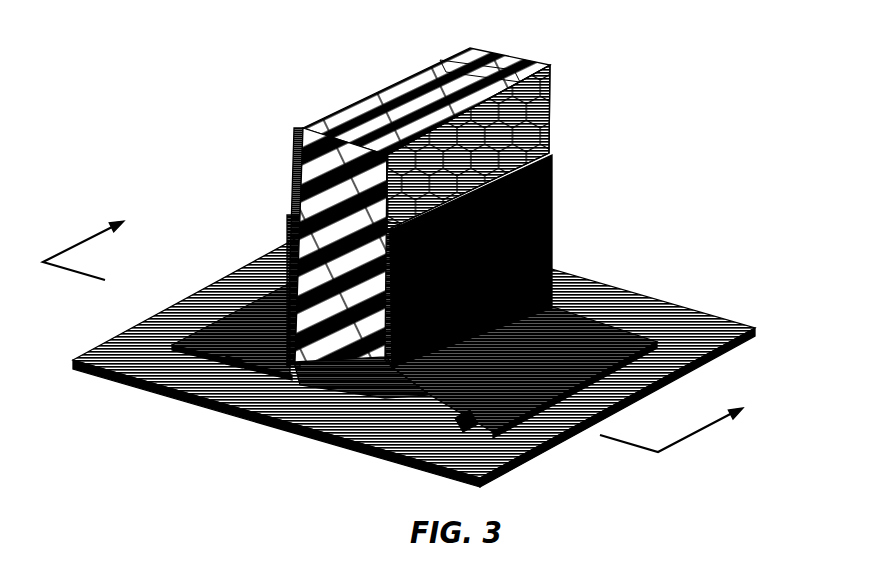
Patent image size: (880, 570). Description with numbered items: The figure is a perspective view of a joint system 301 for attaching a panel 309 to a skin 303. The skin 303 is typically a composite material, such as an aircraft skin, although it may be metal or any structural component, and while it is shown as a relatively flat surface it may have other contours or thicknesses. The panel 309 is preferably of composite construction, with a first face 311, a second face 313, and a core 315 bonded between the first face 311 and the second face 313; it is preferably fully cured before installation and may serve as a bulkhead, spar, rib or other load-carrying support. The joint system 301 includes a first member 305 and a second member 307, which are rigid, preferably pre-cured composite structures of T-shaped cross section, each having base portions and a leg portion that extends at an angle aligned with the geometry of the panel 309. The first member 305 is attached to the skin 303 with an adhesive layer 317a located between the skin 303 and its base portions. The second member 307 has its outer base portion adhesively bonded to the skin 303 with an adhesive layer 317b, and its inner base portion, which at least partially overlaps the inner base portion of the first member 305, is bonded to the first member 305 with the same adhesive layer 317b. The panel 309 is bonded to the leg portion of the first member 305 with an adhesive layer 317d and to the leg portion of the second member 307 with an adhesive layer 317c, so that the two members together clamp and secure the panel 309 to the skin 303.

The joint system 301 is at (228, 96).
The skin 303 is at (217, 408).
The first member 305 is at (268, 290).
The second member 307 is at (617, 330).
The panel 309 is at (510, 60).
The first face 311 is at (368, 100).
The second face 313 is at (550, 107).
The core 315 is at (462, 78).
The adhesive layer 317a is at (233, 362).
The adhesive layer 317b is at (460, 423).
The adhesive layer 317c is at (382, 325).
The adhesive layer 317d is at (287, 252).